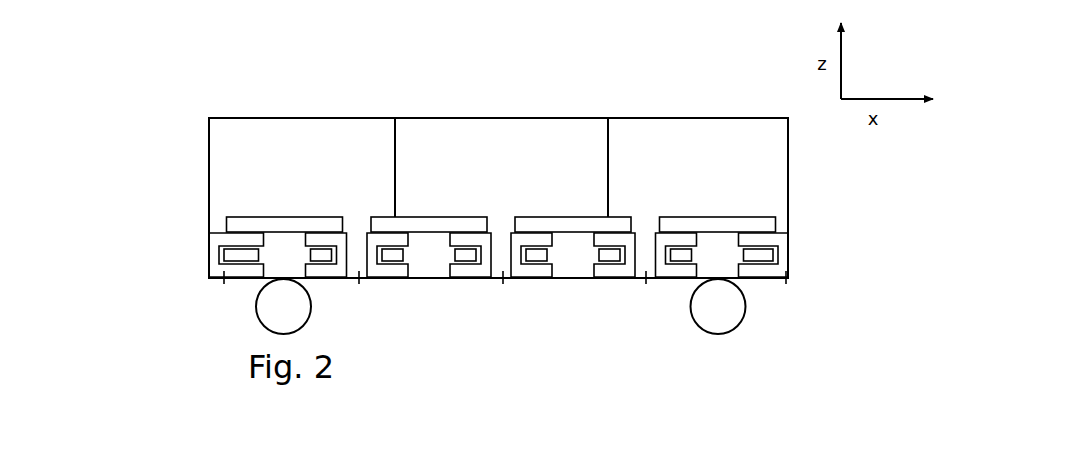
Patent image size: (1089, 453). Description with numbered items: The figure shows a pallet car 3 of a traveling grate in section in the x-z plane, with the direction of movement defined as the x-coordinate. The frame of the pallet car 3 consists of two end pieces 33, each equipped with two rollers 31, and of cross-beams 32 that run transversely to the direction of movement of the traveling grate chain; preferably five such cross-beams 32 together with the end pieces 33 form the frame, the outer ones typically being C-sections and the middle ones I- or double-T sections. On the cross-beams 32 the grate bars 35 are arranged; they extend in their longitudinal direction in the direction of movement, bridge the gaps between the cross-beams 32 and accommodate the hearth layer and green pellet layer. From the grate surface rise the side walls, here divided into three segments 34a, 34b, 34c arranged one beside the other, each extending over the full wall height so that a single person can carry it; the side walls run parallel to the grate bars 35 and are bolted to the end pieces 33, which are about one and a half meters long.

The pallet car 3 is at (298, 100).
The rollers 31 is at (501, 306).
The cross-beams 32 is at (501, 287).
The end pieces 33 is at (501, 272).
The side wall segment 34a is at (302, 167).
The side wall segment 34b is at (501, 167).
The side wall segment 34c is at (698, 167).
The grate bars 35 is at (498, 247).